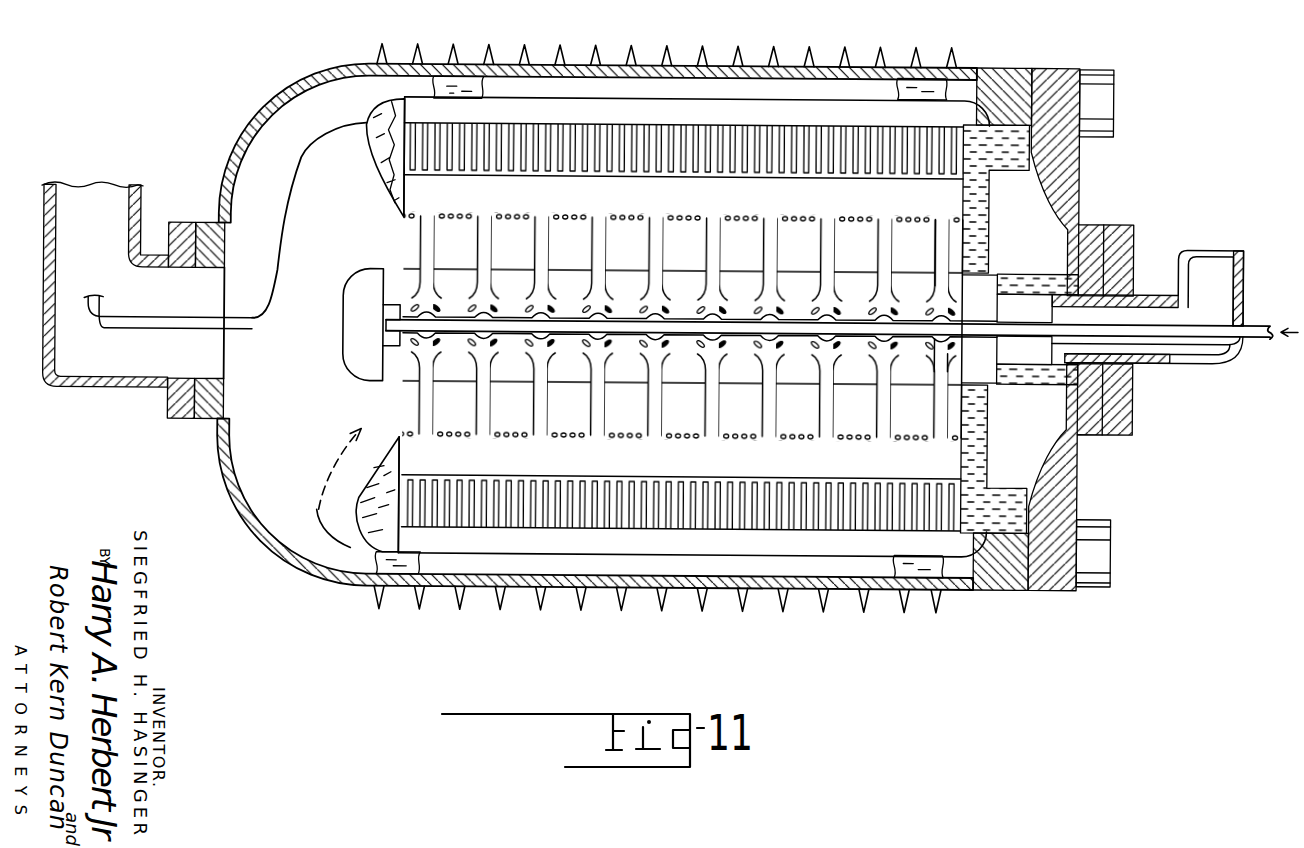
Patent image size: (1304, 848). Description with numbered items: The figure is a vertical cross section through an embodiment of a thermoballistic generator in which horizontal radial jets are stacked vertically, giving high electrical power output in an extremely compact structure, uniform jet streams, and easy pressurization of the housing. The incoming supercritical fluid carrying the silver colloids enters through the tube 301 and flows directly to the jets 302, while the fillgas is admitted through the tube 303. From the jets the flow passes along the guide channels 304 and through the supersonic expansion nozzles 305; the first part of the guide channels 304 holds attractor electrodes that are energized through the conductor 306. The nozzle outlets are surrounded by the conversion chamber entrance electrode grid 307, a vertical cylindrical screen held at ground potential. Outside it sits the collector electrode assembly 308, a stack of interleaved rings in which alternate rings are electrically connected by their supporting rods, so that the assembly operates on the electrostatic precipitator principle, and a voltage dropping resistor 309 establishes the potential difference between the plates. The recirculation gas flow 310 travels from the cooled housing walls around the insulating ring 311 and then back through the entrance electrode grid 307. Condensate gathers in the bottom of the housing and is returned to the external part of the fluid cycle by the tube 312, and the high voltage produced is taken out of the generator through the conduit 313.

The tube 301 is at (1258, 336).
The jets 302 is at (936, 352).
The tube 303 is at (1229, 235).
The guide channels 304 is at (953, 306).
The supersonic expansion nozzles 305 is at (935, 276).
The conductor 306 is at (1173, 361).
The conversion chamber entrance electrode grid 307 is at (853, 214).
The collector electrode assembly 308 is at (498, 178).
The voltage dropping resistor 309 is at (390, 152).
The recirculation gas flow 310 is at (320, 491).
The insulating ring 311 is at (395, 207).
The tube 312 is at (84, 189).
The conduit 313 is at (119, 333).